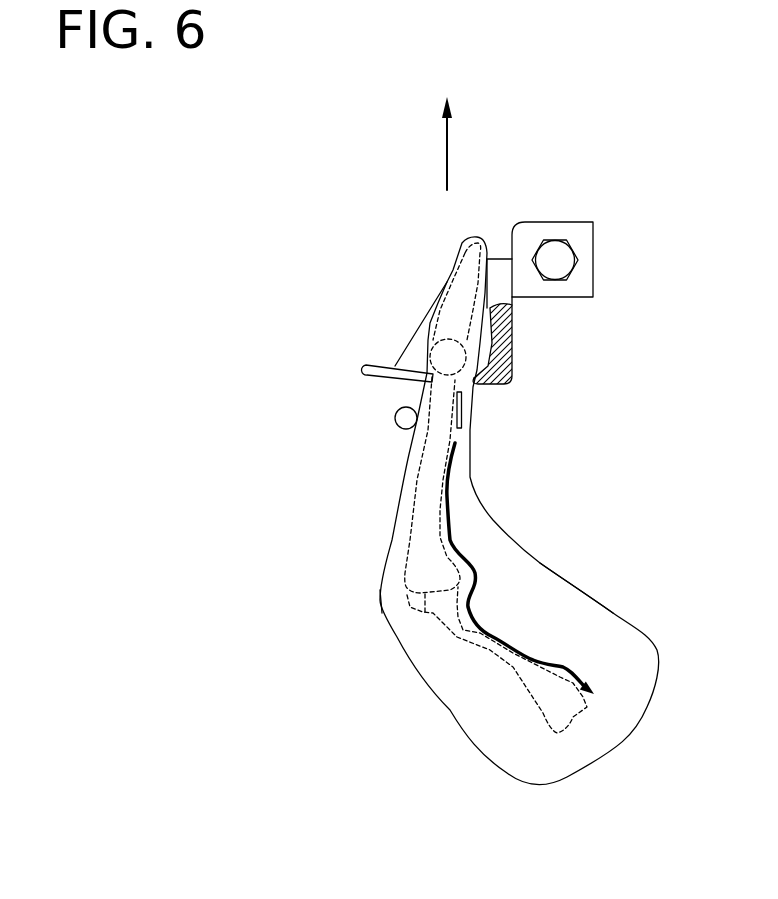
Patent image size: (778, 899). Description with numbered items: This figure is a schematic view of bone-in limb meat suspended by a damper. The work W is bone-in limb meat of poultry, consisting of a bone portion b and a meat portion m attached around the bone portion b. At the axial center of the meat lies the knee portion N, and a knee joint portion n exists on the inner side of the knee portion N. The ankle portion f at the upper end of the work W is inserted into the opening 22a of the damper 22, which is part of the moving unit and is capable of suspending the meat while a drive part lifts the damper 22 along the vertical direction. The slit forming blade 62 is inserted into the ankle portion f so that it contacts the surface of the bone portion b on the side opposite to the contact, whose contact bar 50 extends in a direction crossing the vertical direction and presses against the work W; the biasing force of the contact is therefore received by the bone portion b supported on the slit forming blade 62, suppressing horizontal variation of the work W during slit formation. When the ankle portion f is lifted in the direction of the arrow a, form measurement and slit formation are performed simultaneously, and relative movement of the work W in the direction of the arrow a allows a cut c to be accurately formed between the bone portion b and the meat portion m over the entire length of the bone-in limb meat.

The arrow a is at (447, 143).
The damper 22 is at (510, 335).
The opening 22a is at (407, 370).
The contact bar 50 is at (395, 417).
The slit forming blade 62 is at (463, 408).
The work W is at (409, 670).
The ankle portion f is at (437, 307).
The bone portion b is at (410, 545).
The knee joint portion n is at (403, 594).
The knee portion N is at (378, 607).
The cut c is at (480, 605).
The meat portion m is at (568, 602).